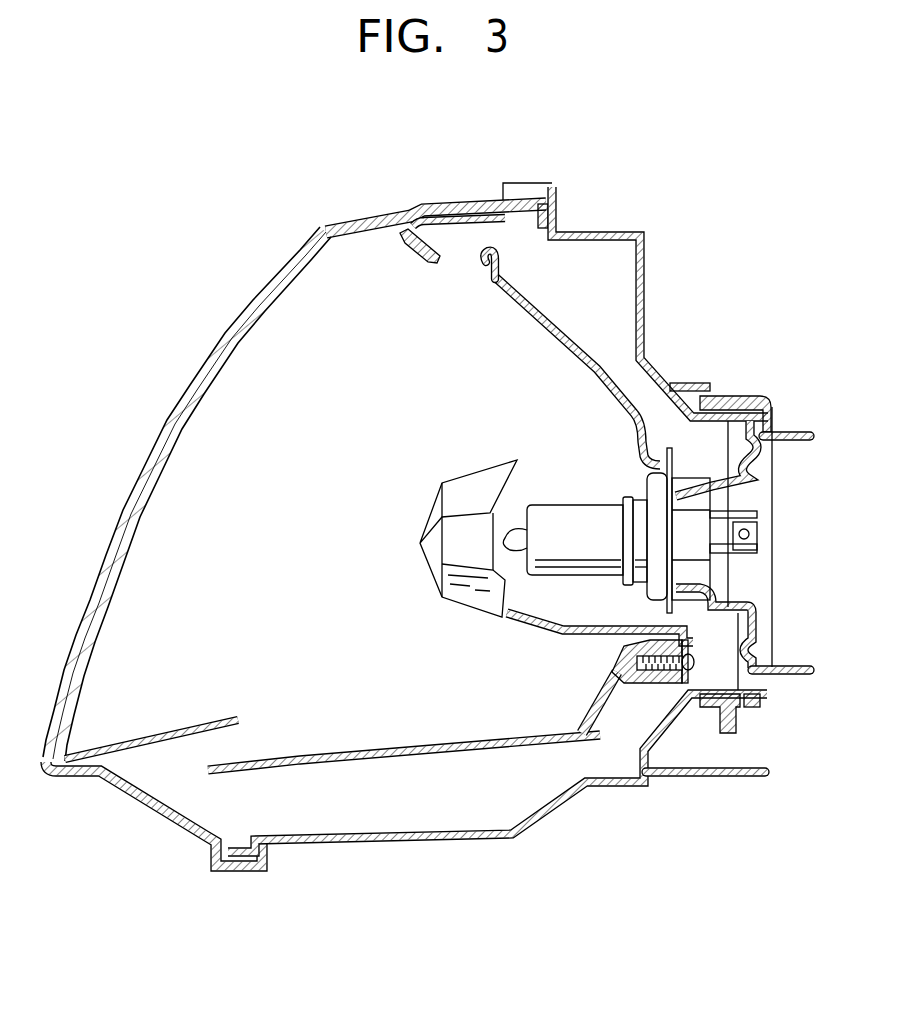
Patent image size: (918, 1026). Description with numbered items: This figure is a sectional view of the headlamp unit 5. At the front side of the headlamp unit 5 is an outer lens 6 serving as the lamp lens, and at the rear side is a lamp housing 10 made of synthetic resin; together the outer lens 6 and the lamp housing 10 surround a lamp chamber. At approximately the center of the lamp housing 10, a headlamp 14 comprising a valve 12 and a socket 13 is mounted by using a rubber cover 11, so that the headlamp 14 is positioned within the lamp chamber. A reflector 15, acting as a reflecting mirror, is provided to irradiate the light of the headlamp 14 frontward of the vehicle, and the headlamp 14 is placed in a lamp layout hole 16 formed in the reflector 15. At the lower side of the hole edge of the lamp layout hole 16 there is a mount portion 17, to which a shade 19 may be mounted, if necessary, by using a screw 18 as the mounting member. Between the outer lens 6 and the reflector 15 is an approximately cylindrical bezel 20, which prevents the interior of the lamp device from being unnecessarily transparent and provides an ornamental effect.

The headlamp unit 5 is at (258, 258).
The outer lens 6 is at (150, 458).
The lamp housing 10 is at (611, 233).
The rubber cover 11 is at (739, 397).
The valve 12 is at (575, 520).
The socket 13 is at (691, 512).
The headlamp 14 is at (538, 590).
The reflector 15 is at (548, 325).
The lamp layout hole 16 is at (650, 610).
The mount portion 17 is at (648, 686).
The screw 18 is at (697, 665).
The shade 19 is at (425, 517).
The bezel 20 is at (212, 720).